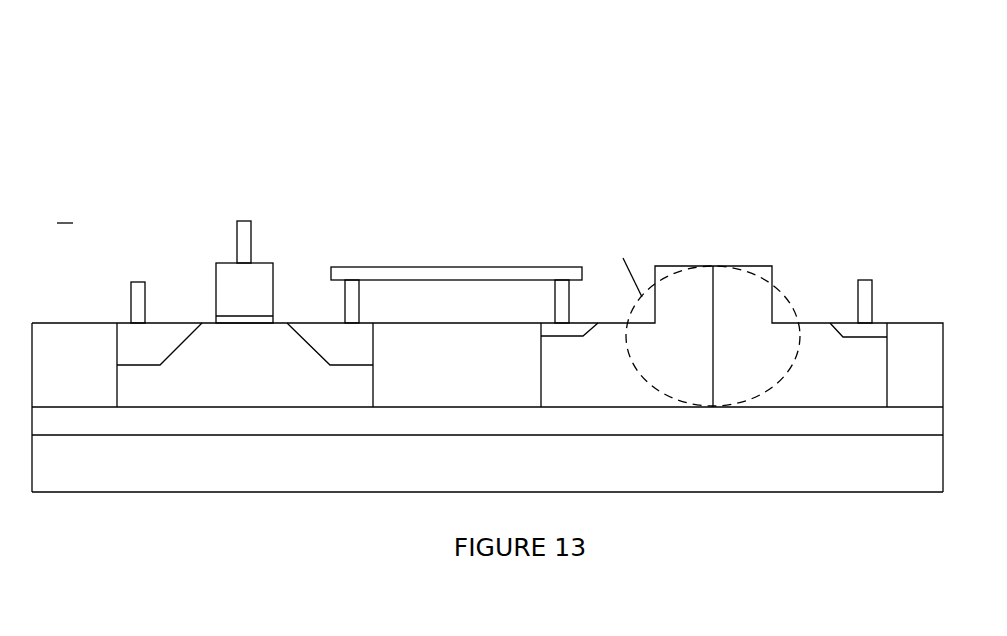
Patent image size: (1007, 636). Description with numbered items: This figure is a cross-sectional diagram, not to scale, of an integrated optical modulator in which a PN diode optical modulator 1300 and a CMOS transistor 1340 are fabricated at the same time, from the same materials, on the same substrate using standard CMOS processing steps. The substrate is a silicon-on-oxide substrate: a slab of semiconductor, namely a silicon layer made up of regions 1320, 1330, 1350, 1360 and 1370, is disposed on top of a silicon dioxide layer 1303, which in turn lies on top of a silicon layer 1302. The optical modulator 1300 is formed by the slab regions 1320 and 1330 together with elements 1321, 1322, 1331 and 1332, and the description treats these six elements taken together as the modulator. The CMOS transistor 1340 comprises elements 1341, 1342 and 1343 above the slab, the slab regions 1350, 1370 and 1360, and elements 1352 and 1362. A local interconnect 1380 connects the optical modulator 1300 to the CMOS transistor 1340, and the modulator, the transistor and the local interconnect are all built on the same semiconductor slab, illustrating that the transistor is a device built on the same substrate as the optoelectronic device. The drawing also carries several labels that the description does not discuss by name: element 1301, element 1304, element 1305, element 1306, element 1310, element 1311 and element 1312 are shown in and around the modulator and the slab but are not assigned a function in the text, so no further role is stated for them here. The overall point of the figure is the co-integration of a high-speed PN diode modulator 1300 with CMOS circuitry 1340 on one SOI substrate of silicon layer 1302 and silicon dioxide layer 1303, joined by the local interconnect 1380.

The optical modulator 1300 is at (727, 167).
The interconnect structure 1301 is at (488, 187).
The silicon layer 1302 is at (502, 473).
The silicon dioxide layer 1303 is at (497, 430).
The well region 1304 is at (353, 380).
The contact region 1305 is at (800, 252).
The PN junction 1306 is at (713, 392).
The diode 1310 is at (693, 243).
The silicide contact 1311 is at (569, 285).
The P-type region 1312 is at (665, 303).
The optical modulator slab region 1320 is at (550, 388).
The optical modulator element 1321 is at (548, 328).
The optical modulator element 1322 is at (562, 288).
The optical modulator slab region 1330 is at (833, 390).
The optical modulator element 1331 is at (877, 330).
The optical modulator element 1332 is at (867, 288).
The CMOS transistor 1340 is at (203, 140).
The CMOS transistor element 1341 is at (230, 285).
The CMOS transistor element 1342 is at (243, 318).
The CMOS transistor element 1343 is at (243, 221).
The CMOS transistor slab region 1350 is at (125, 357).
The CMOS transistor element 1352 is at (138, 298).
The CMOS transistor slab region 1360 is at (325, 350).
The CMOS transistor element 1362 is at (352, 295).
The CMOS transistor slab region 1370 is at (225, 385).
The local interconnect 1380 is at (432, 273).